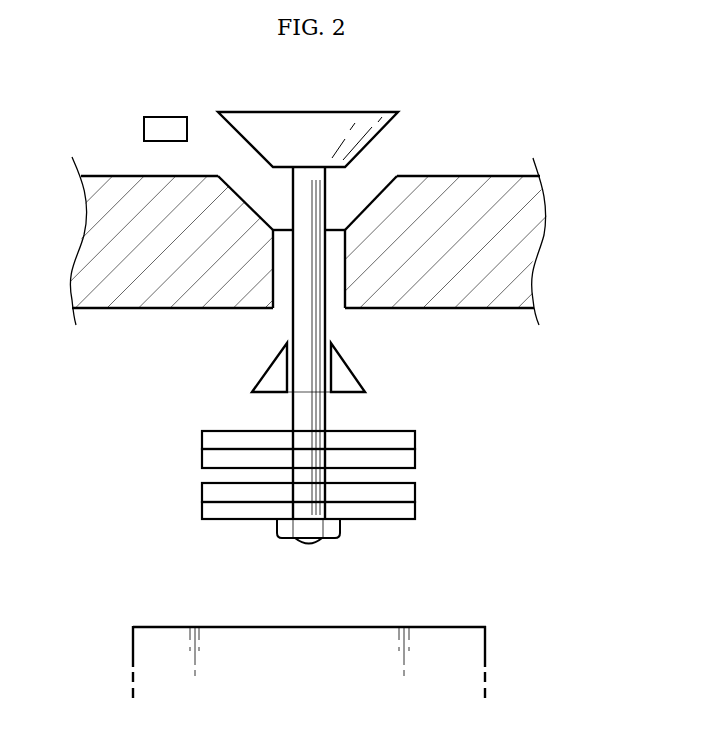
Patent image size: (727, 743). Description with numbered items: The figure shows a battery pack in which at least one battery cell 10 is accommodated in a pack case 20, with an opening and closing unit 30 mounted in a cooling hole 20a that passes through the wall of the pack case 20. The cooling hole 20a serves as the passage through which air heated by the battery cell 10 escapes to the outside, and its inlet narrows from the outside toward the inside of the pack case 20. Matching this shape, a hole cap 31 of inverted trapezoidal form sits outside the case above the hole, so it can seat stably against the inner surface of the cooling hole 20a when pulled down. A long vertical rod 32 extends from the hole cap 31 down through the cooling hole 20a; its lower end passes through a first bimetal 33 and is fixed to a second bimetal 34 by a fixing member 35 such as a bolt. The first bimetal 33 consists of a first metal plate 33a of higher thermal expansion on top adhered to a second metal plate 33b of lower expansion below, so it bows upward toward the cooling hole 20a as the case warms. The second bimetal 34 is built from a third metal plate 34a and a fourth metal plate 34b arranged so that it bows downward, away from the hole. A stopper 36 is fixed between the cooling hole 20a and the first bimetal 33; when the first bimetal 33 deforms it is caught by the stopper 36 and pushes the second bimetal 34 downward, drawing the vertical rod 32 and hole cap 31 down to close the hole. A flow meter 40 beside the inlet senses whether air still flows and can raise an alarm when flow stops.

The battery cell 10 is at (235, 627).
The pack case 20 is at (478, 176).
The cooling hole 20a is at (338, 268).
The opening and closing unit 30 is at (168, 432).
The hole cap 31 is at (339, 112).
The vertical rod 32 is at (293, 200).
The first bimetal 33 is at (361, 451).
The first metal plate 33a is at (417, 441).
The second metal plate 33b is at (417, 462).
The second bimetal 34 is at (361, 501).
The third metal plate 34a is at (417, 511).
The fourth metal plate 34b is at (417, 491).
The fixing member 35 is at (340, 527).
The stopper 36 is at (275, 364).
The flow meter 40 is at (165, 117).